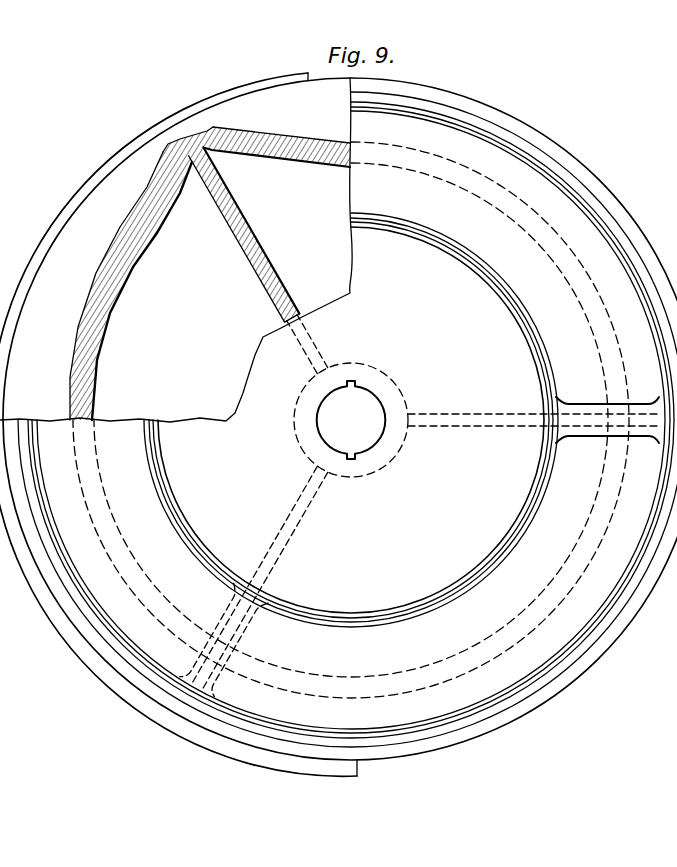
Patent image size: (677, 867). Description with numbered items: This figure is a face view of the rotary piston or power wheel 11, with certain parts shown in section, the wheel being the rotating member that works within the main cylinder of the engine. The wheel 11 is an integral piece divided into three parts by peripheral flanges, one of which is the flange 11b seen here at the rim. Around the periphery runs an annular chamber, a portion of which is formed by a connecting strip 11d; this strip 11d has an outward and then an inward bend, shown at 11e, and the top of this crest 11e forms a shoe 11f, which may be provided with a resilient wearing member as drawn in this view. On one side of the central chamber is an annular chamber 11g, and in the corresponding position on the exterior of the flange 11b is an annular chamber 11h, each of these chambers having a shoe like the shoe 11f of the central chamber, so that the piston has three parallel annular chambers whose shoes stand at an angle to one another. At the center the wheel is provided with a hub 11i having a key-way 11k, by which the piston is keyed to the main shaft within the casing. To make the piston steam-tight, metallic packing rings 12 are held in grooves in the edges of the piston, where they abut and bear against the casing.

The rotary piston or power wheel 11 is at (314, 388).
The peripheral flange 11b is at (571, 139).
The connecting strip 11d is at (92, 390).
The bend or crest 11e is at (268, 160).
The shoe 11f is at (182, 130).
The annular chamber 11g is at (5, 339).
The annular chamber 11h is at (11, 433).
The hub 11i is at (408, 382).
The key-way 11k is at (350, 461).
The metallic packing rings 12 is at (510, 546).